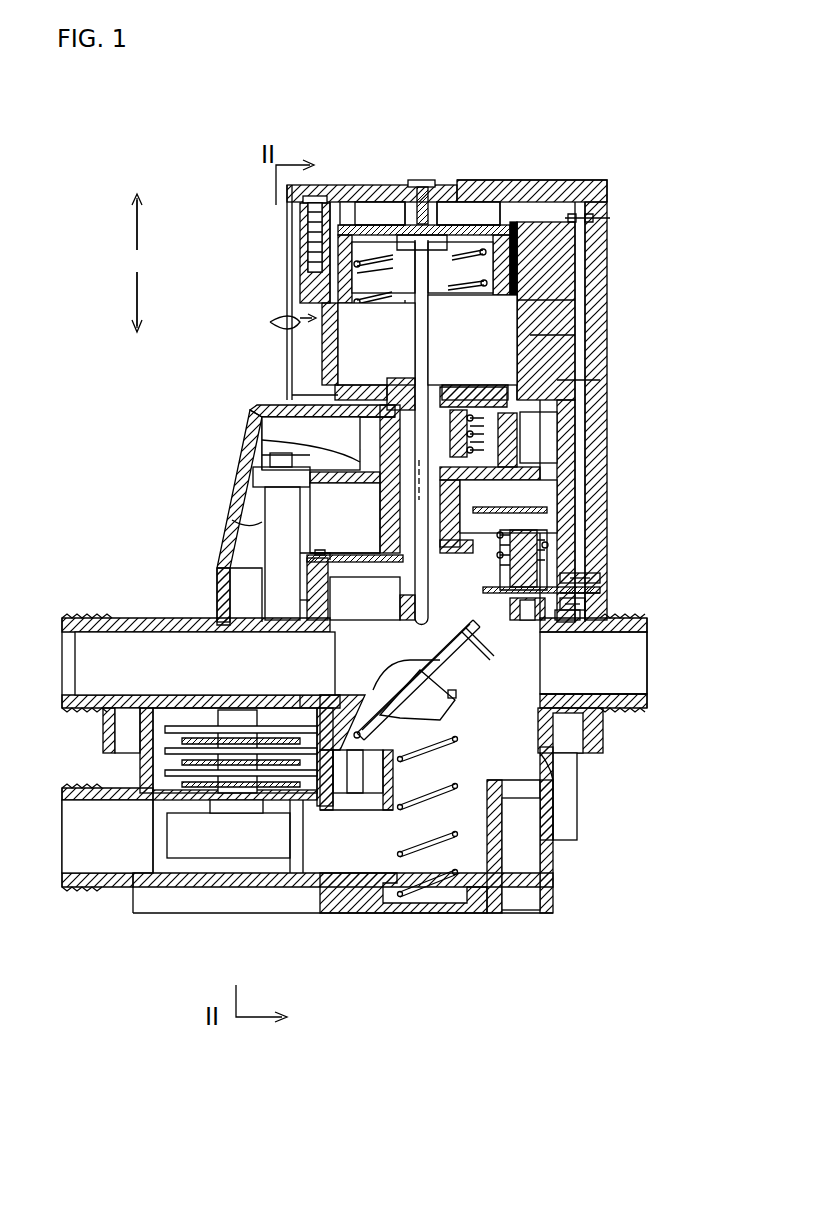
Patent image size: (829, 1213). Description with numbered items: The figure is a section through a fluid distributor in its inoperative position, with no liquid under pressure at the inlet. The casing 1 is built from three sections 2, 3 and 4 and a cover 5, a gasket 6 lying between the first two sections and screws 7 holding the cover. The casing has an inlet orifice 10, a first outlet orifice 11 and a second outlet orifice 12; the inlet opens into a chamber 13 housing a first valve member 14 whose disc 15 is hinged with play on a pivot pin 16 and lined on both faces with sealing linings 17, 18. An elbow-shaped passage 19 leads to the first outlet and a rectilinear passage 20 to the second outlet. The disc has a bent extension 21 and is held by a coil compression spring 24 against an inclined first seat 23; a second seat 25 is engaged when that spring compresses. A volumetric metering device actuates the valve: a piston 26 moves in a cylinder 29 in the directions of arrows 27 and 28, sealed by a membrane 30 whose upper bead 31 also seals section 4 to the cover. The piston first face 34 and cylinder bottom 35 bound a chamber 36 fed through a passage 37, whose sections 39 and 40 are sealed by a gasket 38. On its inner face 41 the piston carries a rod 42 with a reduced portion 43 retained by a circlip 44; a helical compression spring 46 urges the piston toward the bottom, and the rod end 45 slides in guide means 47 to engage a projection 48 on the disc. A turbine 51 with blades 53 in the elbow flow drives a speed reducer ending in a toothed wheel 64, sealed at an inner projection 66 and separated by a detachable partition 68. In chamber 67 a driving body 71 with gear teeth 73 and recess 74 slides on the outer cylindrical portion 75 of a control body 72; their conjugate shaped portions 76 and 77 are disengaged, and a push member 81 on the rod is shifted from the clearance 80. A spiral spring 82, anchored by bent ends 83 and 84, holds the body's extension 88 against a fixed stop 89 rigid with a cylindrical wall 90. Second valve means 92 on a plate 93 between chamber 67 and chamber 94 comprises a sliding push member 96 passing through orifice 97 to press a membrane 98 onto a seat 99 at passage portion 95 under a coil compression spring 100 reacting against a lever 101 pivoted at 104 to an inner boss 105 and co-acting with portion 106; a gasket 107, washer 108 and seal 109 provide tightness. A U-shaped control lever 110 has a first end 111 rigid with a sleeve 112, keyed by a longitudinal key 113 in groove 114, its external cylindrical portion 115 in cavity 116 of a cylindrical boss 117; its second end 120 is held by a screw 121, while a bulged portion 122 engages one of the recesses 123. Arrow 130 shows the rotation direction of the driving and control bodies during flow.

The casing 1 is at (618, 258).
The casing section 2 is at (555, 890).
The casing section 3 is at (600, 745).
The casing section 4 is at (580, 502).
The cover 5 is at (545, 195).
The gasket 6 is at (580, 780).
The screws 7 is at (312, 198).
The inlet orifice 10 is at (640, 668).
The first outlet orifice 11 is at (72, 855).
The second outlet orifice 12 is at (75, 640).
The chamber 13 is at (630, 690).
The first valve member 14 is at (470, 655).
The disc 15 is at (460, 672).
The pivot pin 16 is at (365, 733).
The lining 17 is at (372, 690).
The lining 18 is at (455, 690).
The elbow-shaped passage 19 is at (505, 895).
The rectilinear passage 20 is at (212, 655).
The bent extension 21 is at (465, 665).
The first valve seat 23 is at (340, 683).
The coil compression spring 24 is at (435, 870).
The second seat 25 is at (560, 760).
The piston 26 is at (458, 228).
The arrow 27 is at (134, 220).
The arrow 28 is at (134, 292).
The cylinder 29 is at (520, 320).
The membrane 30 is at (520, 255).
The upper bead 31 is at (512, 225).
The first face 34 is at (385, 222).
The bottom 35 is at (465, 200).
The chamber 36 is at (472, 213).
The passage 37 is at (585, 378).
The gasket 38 is at (598, 215).
The passage section 39 is at (580, 250).
The passage section 40 is at (600, 182).
The inner face 41 is at (518, 275).
The rod 42 is at (435, 306).
The reduced-diameter portion 43 is at (430, 262).
The circlip 44 is at (408, 252).
The rod end 45 is at (400, 595).
The helical compression spring 46 is at (392, 305).
The guide means 47 is at (410, 605).
The projection 48 is at (405, 660).
The turbine 51 is at (190, 855).
The blades 53 is at (243, 860).
The toothed wheel 64 is at (238, 480).
The inner projection 66 is at (232, 528).
The chamber 67 is at (248, 510).
The detachable partition 68 is at (290, 860).
The driving body 71 is at (300, 465).
The control body 72 is at (377, 505).
The gear teeth 73 is at (303, 513).
The internal cylindrical recess 74 is at (462, 494).
The outer cylindrical portion 75 is at (380, 548).
The shaped portion 76 is at (300, 430).
The shaped portion 77 is at (262, 420).
The clearance 80 is at (431, 496).
The push member 81 is at (425, 492).
The spiral spring 82 is at (500, 402).
The bent end portion 83 is at (385, 390).
The bent end portion 84 is at (540, 460).
The extension 88 is at (480, 425).
The fixed stop 89 is at (500, 440).
The cylindrical wall 90 is at (310, 448).
The second valve means 92 is at (682, 522).
The plate 93 is at (500, 555).
The chamber 94 is at (635, 680).
The passage portion 95 is at (520, 618).
The sliding push member 96 is at (540, 560).
The orifice 97 is at (575, 580).
The membrane 98 is at (580, 598).
The seat 99 is at (567, 618).
The coil compression spring 100 is at (545, 532).
The lever 101 is at (515, 505).
The pivot 104 is at (310, 552).
The inner boss 105 is at (320, 575).
The portion 106 is at (410, 563).
The gasket 107 is at (632, 596).
The washer 108 is at (592, 625).
The seal 109 is at (400, 595).
The control lever 110 is at (300, 240).
The first end 111 is at (320, 325).
The sleeve 112 is at (560, 350).
The longitudinal key 113 is at (452, 347).
The longitudinal groove 114 is at (460, 380).
The external cylindrical portion 115 is at (412, 385).
The cylindrical cavity 116 is at (425, 315).
The cylindrical boss 117 is at (378, 487).
The second end 120 is at (338, 200).
The screw 121 is at (428, 176).
The bulged portion 122 is at (345, 392).
The recesses 123 is at (330, 404).
The arrow 130 is at (278, 320).